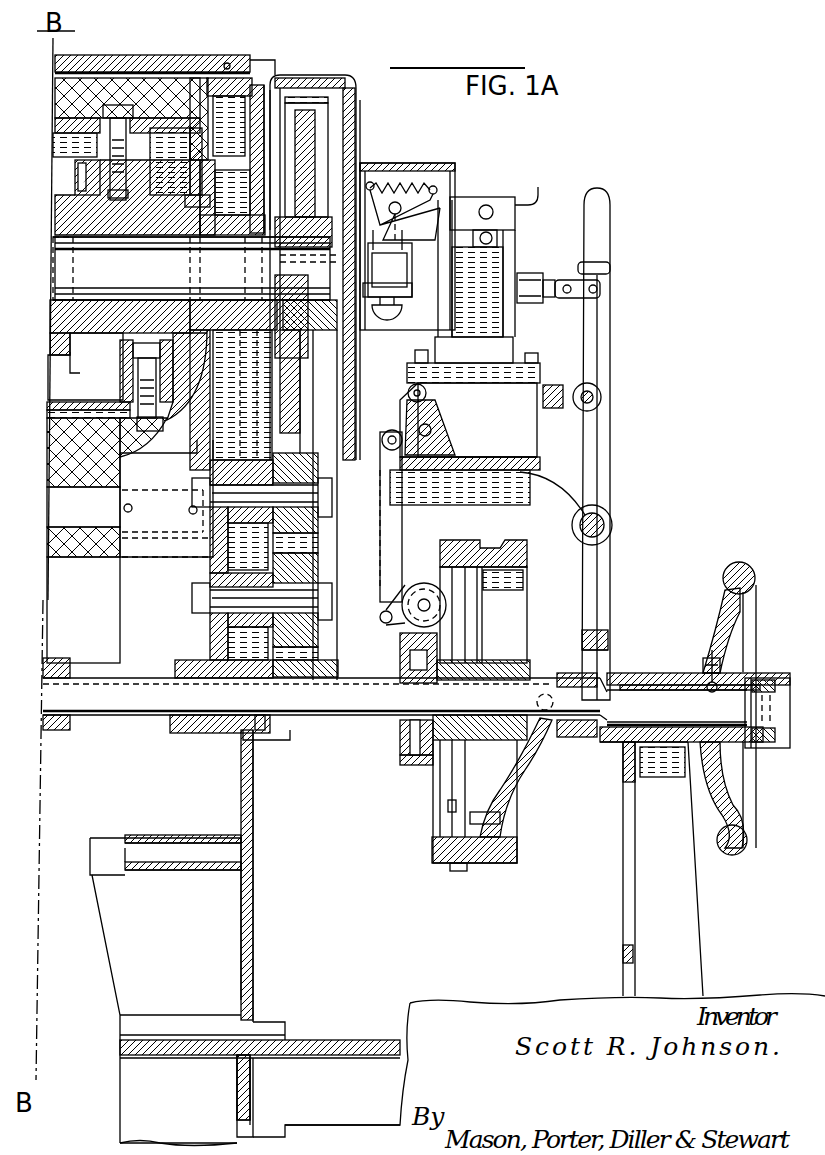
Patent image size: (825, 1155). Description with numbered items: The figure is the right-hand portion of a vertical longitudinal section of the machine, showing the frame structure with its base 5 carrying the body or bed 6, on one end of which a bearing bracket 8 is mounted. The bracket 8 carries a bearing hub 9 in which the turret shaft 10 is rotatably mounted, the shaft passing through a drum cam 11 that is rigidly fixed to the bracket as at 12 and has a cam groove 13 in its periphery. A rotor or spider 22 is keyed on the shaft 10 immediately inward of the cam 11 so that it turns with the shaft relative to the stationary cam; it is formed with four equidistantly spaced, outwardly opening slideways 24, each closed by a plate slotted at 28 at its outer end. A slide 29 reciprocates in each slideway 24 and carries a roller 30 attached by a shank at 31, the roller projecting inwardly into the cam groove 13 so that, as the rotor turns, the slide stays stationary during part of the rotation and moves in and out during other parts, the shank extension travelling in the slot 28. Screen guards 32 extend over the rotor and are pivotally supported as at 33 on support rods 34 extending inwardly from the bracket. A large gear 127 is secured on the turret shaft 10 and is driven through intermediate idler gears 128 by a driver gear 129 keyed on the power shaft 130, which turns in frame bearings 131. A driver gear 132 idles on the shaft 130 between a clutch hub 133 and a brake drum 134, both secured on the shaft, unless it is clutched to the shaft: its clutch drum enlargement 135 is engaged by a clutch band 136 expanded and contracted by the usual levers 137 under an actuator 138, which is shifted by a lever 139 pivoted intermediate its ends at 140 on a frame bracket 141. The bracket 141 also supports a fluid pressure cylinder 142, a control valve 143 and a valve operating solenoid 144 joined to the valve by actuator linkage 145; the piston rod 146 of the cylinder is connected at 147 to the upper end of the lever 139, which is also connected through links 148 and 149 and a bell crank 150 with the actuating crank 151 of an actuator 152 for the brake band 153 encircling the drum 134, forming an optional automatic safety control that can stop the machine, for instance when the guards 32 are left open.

The base 5 is at (237, 1098).
The body or bed 6 is at (258, 810).
The bearing bracket 8 is at (270, 395).
The bearing hub 9 is at (280, 355).
The turret shaft 10 is at (75, 268).
The drum cam 11 is at (175, 325).
The fixing of drum cam 12 is at (190, 225).
The cam groove 13 is at (128, 228).
The rotor or spider 22 is at (58, 320).
The slideway 24 is at (58, 370).
The closure plate slot 28 is at (160, 122).
The slide 29 is at (70, 135).
The roller 30 is at (80, 172).
The roller supporting shank 31 is at (118, 108).
The screen guard 32 is at (95, 560).
The pivotal support 33 is at (188, 49).
The support rod 34 is at (252, 62).
The large gear 127 is at (318, 100).
The intermediate idler gear 128 is at (215, 575).
The driver gear 129 is at (283, 740).
The power shaft 130 is at (128, 720).
The frame bearing 131 is at (215, 735).
The driver gear 132 is at (458, 872).
The clutch hub 133 is at (525, 685).
The brake drum 134 is at (408, 730).
The clutch drum enlargement 135 is at (505, 548).
The clutch band 136 is at (515, 590).
The clutch levers 137 is at (530, 760).
The actuator 138 is at (572, 738).
The lever 139 is at (603, 205).
The pivot 140 is at (608, 517).
The frame bracket 141 is at (560, 458).
The fluid pressure cylinder 142 is at (500, 245).
The control valve 143 is at (487, 188).
The valve operating solenoid 144 is at (390, 273).
The actuator linkage 145 is at (420, 195).
The piston rod 146 is at (555, 290).
The connection 147 is at (597, 302).
The link 148 is at (520, 410).
The link 149 is at (400, 530).
The bell crank 150 is at (455, 410).
The actuating crank 151 is at (395, 625).
The actuator 152 is at (405, 640).
The brake band 153 is at (418, 768).